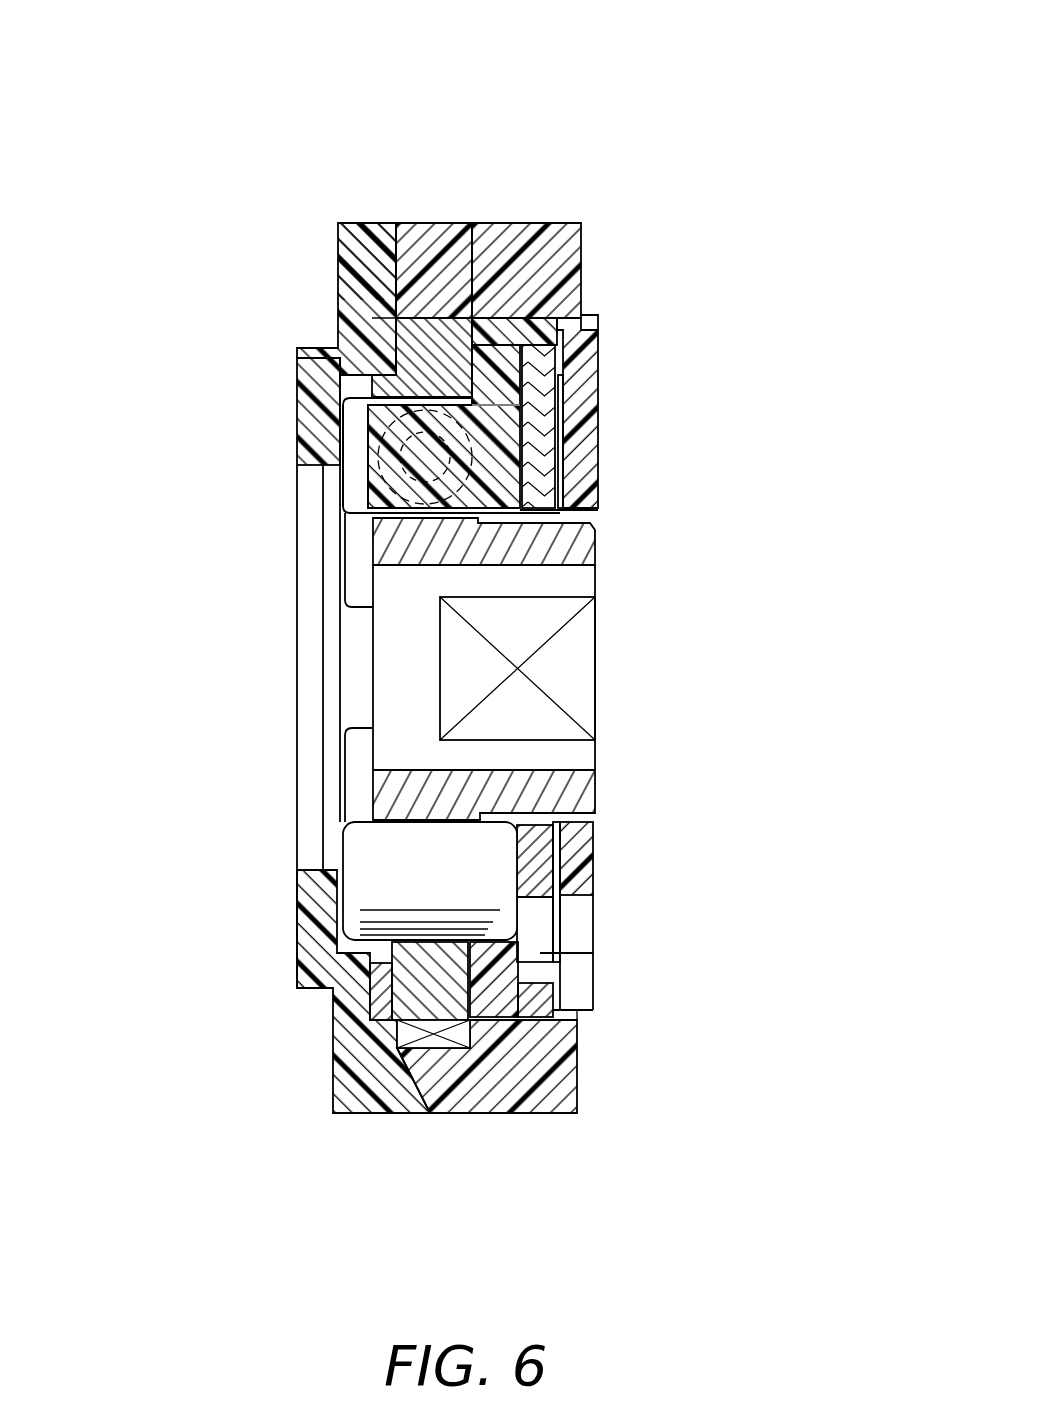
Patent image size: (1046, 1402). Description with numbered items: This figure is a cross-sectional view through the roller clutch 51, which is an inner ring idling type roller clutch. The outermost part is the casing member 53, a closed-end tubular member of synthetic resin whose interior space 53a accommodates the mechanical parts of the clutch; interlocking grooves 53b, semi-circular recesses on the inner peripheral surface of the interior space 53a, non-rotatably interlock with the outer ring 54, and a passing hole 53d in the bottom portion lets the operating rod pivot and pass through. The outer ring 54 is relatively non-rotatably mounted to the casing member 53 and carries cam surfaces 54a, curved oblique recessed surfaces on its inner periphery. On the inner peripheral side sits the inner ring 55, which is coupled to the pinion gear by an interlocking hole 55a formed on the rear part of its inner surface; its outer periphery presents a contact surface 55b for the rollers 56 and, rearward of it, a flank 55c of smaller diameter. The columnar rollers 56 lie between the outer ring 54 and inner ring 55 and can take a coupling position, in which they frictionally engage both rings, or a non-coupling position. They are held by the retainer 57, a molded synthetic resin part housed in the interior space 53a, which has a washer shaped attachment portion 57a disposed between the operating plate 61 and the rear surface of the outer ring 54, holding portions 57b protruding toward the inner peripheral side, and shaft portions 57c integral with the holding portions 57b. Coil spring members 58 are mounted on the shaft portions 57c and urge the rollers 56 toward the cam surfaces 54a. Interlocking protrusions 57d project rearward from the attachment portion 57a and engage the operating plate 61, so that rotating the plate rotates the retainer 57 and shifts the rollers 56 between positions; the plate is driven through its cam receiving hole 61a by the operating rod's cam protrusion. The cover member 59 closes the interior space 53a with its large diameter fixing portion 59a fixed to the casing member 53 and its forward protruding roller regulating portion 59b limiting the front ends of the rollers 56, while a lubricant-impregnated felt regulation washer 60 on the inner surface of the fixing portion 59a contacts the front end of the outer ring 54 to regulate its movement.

The roller clutch 51 is at (571, 131).
The casing member 53 is at (575, 667).
The interior space 53a is at (488, 1008).
The interlocking grooves 53b is at (438, 1046).
The passing hole 53d is at (566, 898).
The outer ring 54 is at (437, 660).
The cam surfaces 54a is at (432, 930).
The inner ring 55 is at (478, 590).
The interlocking hole 55a is at (568, 652).
The contact surface 55b is at (560, 476).
The flank 55c is at (575, 516).
The rollers 56 is at (357, 850).
The retainer 57 is at (469, 547).
The attachment portion 57a is at (497, 975).
The holding portions 57b is at (365, 503).
The shaft portions 57c is at (343, 462).
The interlocking protrusions 57d is at (540, 323).
The spring members 58 is at (533, 349).
The cover member 59 is at (282, 590).
The fixing portion 59a is at (357, 262).
The roller regulating portion 59b is at (310, 355).
The regulation washer 60 is at (376, 998).
The operating plate 61 is at (634, 639).
The cam receiving hole 61a is at (557, 895).